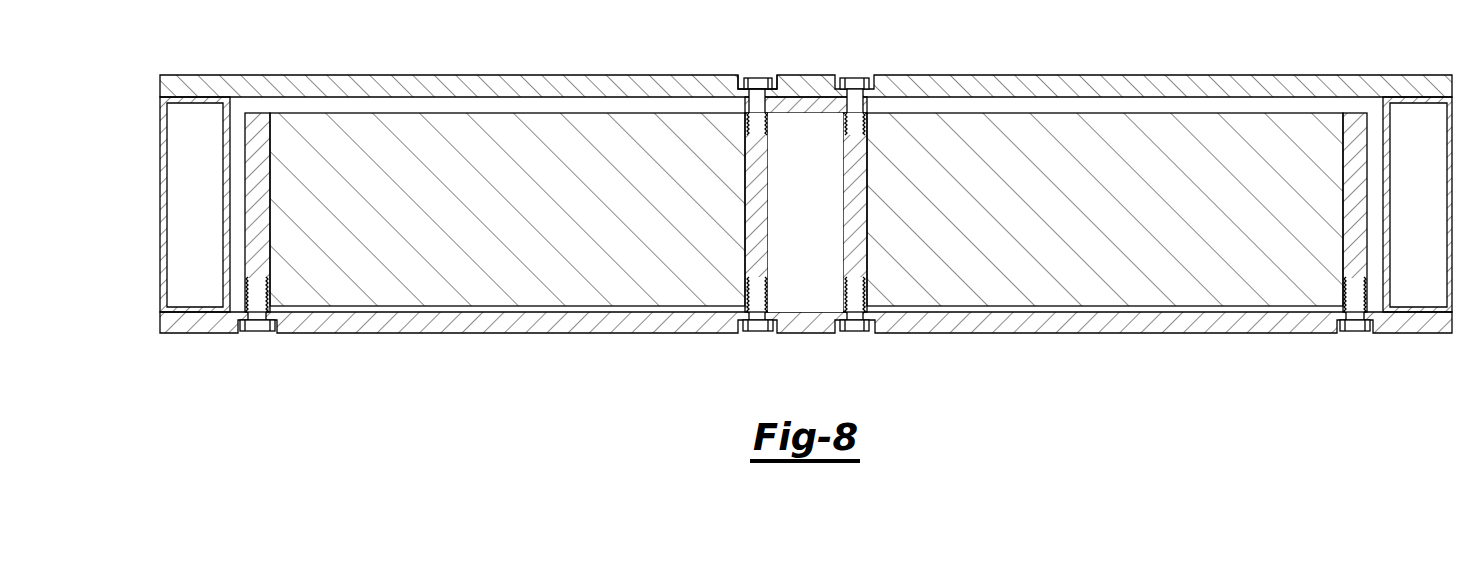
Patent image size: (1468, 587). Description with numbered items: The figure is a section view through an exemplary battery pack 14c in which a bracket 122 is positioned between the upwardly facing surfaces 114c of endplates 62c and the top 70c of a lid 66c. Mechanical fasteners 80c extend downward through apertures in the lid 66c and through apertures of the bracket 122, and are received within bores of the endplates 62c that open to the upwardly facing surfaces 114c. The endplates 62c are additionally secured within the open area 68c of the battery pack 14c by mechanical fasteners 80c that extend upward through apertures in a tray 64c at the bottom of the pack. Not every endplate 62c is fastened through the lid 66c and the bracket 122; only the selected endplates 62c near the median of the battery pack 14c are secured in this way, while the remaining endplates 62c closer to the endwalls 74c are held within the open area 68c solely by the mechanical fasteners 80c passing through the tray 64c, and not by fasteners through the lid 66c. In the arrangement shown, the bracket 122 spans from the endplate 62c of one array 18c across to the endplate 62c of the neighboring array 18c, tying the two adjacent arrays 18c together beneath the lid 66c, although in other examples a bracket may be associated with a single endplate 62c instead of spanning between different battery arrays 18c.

The battery pack 14c is at (1334, 50).
The array 18c is at (635, 96).
The endplate 62c is at (770, 218).
The tray 64c is at (420, 326).
The lid 66c is at (1100, 88).
The open area 68c is at (821, 132).
The top 70c is at (383, 78).
The endwall 74c is at (160, 143).
The mechanical fastener 80c is at (757, 77).
The upwardly facing surface 114c is at (742, 87).
The bracket 122 is at (808, 102).